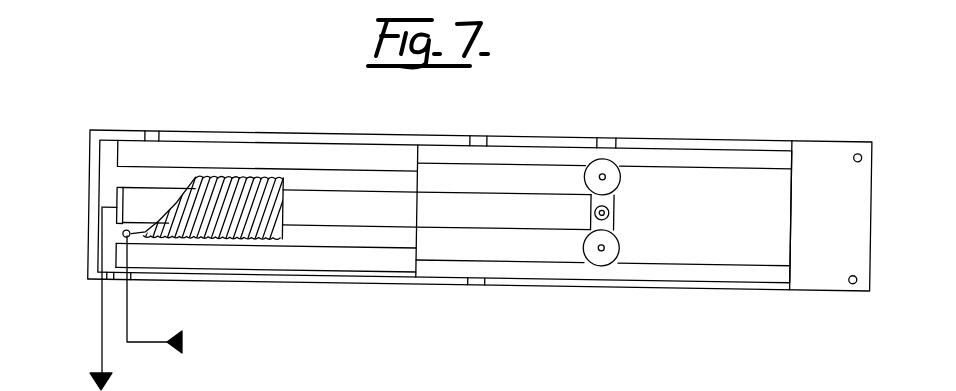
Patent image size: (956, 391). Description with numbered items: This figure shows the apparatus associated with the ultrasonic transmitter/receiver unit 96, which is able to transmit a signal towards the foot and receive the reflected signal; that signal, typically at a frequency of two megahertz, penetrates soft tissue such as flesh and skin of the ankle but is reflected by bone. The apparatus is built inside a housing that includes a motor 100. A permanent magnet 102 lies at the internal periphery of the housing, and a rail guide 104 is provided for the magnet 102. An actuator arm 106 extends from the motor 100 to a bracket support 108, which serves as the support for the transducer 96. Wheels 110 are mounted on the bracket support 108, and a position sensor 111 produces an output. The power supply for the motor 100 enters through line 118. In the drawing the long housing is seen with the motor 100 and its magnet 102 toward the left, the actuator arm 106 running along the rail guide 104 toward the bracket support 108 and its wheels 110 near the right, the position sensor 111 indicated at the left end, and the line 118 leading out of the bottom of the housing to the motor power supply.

The transmitter/receiver unit 96 is at (617, 209).
The motor 100 is at (259, 174).
The permanent magnet 102 is at (321, 157).
The rail guide 104 is at (533, 155).
The actuator arm 106 is at (487, 205).
The bracket support 108 is at (620, 221).
The wheels 110 is at (611, 168).
The position sensor 111 is at (104, 208).
The line 118 is at (143, 343).